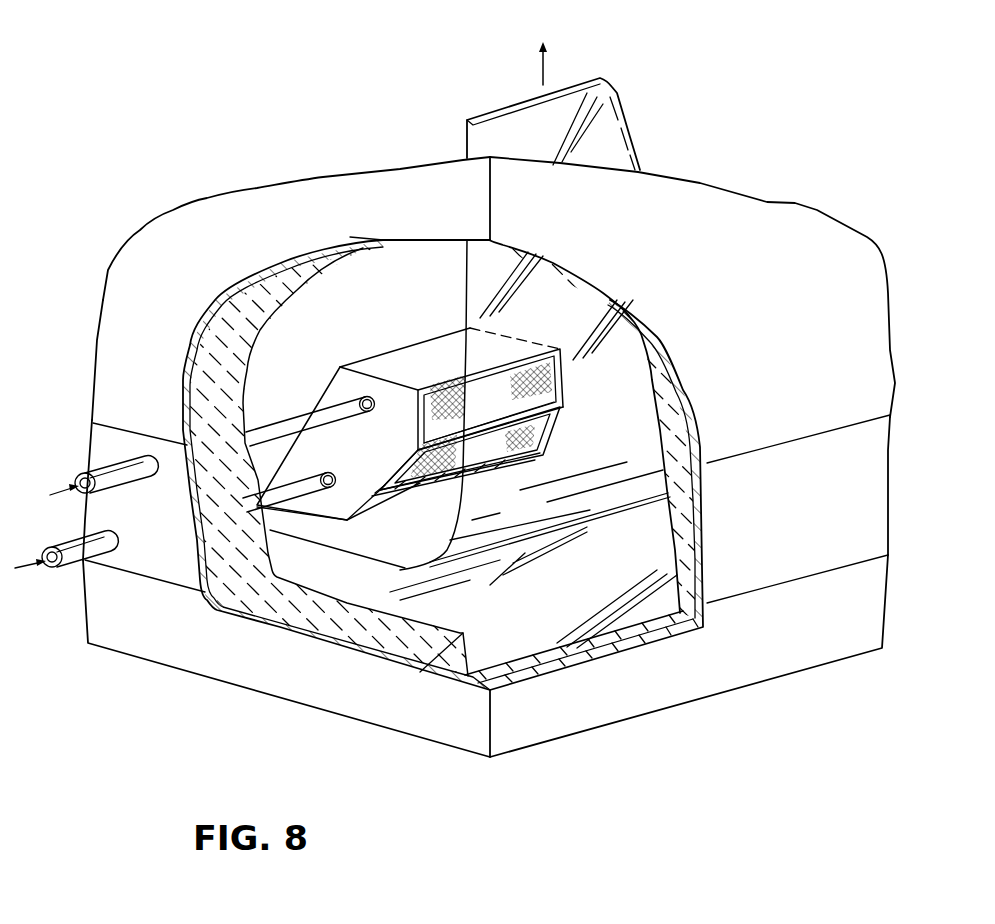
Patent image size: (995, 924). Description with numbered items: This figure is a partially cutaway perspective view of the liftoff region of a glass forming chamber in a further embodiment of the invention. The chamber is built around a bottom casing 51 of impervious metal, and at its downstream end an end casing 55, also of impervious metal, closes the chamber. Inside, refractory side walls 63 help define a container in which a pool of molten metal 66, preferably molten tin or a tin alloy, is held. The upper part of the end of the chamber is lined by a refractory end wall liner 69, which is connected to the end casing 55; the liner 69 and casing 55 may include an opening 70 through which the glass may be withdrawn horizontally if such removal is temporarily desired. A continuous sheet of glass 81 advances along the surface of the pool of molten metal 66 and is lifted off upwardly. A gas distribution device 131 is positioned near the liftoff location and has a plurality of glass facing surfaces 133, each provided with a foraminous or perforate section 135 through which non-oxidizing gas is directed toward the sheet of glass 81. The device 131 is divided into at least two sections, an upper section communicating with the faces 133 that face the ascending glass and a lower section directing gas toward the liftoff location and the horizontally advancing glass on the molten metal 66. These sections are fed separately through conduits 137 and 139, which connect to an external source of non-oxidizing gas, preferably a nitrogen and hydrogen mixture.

The bottom casing 51 is at (783, 642).
The end casing 55 is at (800, 412).
The refractory side walls 63 is at (227, 527).
The pool of molten metal 66 is at (580, 598).
The end wall liner 69 is at (670, 407).
The opening 70 is at (802, 529).
The continuous sheet of glass 81 is at (615, 437).
The gas distribution device 131 is at (410, 404).
The glass facing surfaces 133 is at (436, 385).
The burner screens 135 is at (433, 423).
The conduit 137 is at (290, 430).
The conduit 139 is at (77, 548).